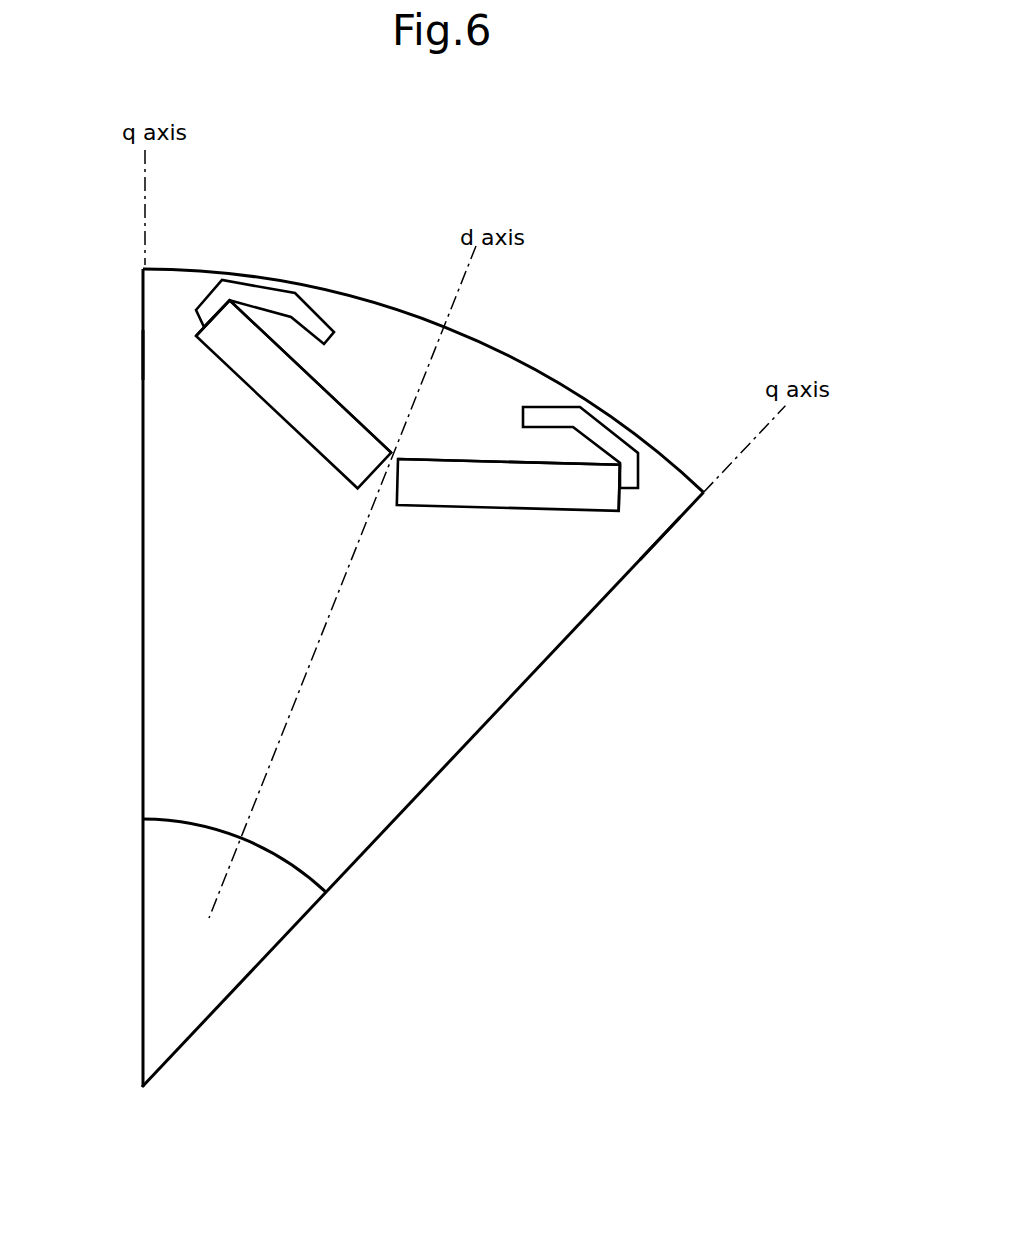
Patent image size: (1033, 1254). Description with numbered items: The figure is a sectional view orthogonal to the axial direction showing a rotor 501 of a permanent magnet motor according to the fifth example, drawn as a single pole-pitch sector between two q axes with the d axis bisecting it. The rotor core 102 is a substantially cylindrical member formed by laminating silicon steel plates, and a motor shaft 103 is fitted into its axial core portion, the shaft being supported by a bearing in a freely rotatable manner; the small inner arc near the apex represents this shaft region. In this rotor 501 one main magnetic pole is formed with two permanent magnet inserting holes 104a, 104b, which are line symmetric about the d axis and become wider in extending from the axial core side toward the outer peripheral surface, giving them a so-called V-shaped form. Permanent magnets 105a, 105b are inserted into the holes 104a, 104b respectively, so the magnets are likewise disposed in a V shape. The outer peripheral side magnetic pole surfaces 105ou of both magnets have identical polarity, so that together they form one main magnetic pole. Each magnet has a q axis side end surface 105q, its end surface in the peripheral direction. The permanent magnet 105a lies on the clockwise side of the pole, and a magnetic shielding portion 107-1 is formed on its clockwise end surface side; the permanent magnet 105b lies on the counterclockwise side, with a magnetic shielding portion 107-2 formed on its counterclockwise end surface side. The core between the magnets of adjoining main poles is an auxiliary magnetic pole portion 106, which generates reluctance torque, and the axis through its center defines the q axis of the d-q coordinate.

The rotor 501 is at (395, 678).
The rotor core 102 is at (483, 703).
The motor shaft 103 is at (278, 922).
The permanent magnet inserting hole 104a is at (508, 400).
The permanent magnet inserting hole 104b is at (312, 345).
The permanent magnet 105a is at (513, 478).
The permanent magnet 105b is at (283, 380).
The outer peripheral side magnetic pole surface 105ou is at (282, 347).
The q axis side end surface 105q is at (195, 330).
The auxiliary magnetic pole portion 106 is at (145, 353).
The magnetic shielding portion 107-1 is at (607, 438).
The magnetic shielding portion 107-2 is at (248, 292).